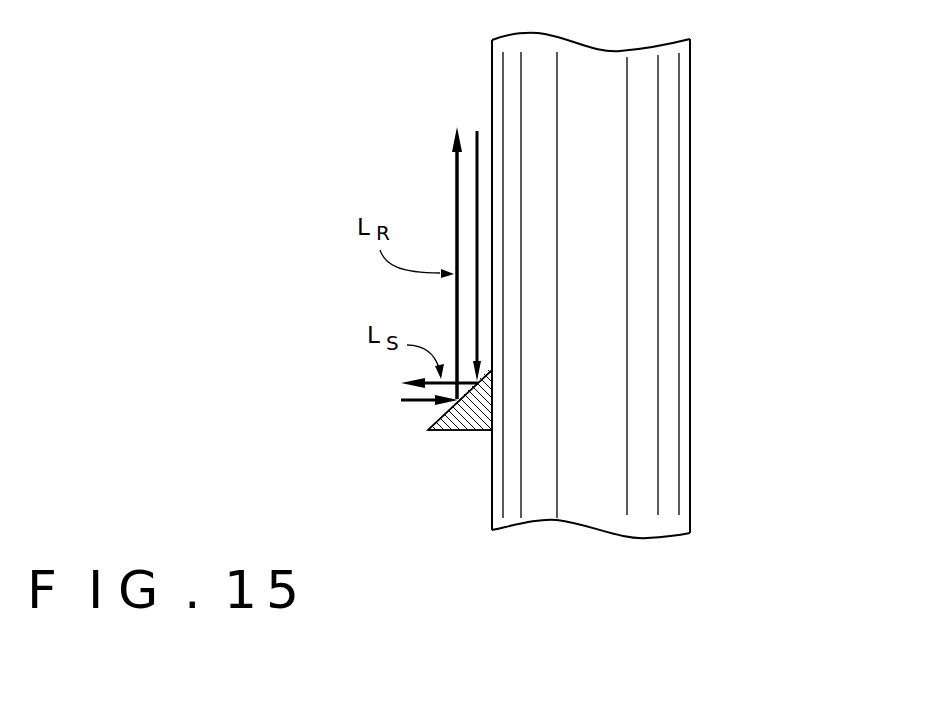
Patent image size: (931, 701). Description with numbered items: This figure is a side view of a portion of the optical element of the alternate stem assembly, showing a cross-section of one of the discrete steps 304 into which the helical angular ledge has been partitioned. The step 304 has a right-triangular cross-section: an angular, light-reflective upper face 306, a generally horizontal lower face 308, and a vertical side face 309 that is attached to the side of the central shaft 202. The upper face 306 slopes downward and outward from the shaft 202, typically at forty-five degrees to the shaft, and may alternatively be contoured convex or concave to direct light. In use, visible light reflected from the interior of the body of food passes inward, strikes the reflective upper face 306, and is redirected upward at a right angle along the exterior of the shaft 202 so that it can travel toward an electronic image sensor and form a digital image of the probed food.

The shaft 202 is at (609, 163).
The vertical side face 309 is at (513, 398).
The discrete step 304 is at (459, 424).
The upper face 306 is at (428, 418).
The lower face 308 is at (480, 462).